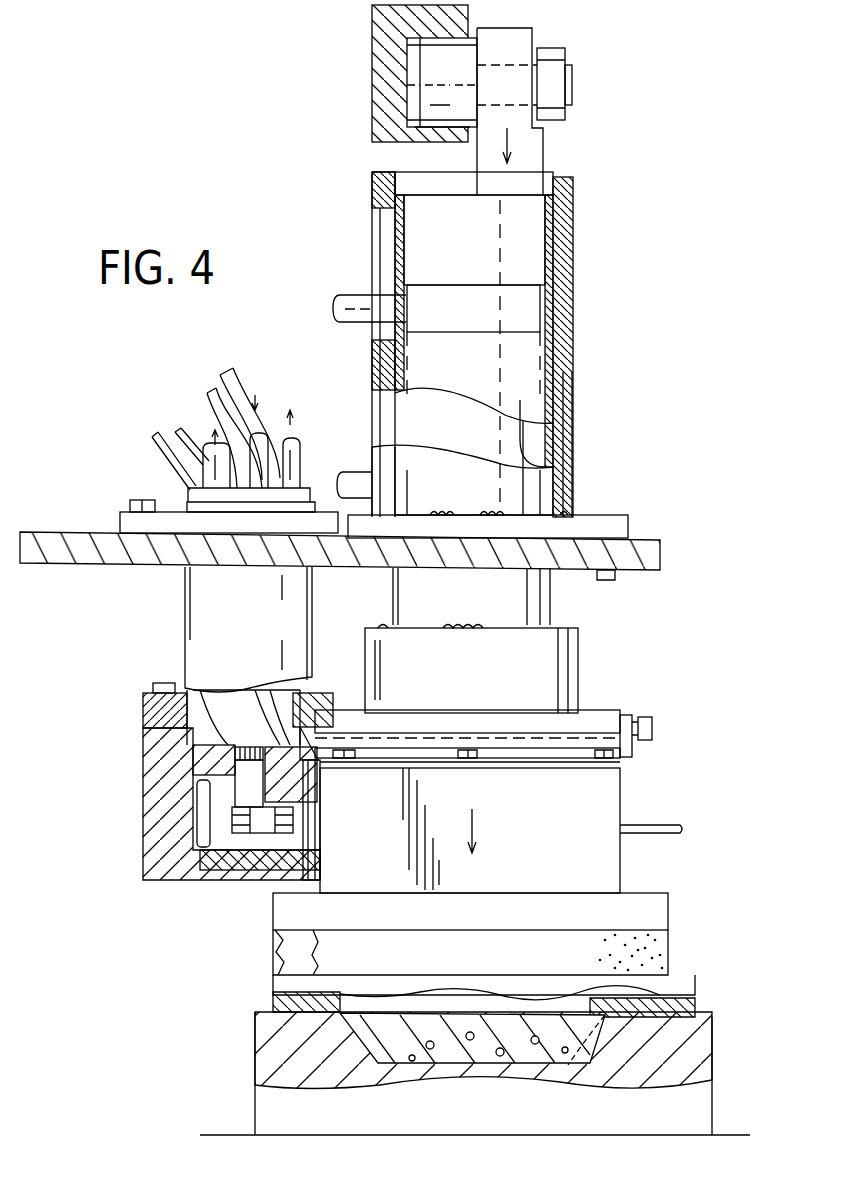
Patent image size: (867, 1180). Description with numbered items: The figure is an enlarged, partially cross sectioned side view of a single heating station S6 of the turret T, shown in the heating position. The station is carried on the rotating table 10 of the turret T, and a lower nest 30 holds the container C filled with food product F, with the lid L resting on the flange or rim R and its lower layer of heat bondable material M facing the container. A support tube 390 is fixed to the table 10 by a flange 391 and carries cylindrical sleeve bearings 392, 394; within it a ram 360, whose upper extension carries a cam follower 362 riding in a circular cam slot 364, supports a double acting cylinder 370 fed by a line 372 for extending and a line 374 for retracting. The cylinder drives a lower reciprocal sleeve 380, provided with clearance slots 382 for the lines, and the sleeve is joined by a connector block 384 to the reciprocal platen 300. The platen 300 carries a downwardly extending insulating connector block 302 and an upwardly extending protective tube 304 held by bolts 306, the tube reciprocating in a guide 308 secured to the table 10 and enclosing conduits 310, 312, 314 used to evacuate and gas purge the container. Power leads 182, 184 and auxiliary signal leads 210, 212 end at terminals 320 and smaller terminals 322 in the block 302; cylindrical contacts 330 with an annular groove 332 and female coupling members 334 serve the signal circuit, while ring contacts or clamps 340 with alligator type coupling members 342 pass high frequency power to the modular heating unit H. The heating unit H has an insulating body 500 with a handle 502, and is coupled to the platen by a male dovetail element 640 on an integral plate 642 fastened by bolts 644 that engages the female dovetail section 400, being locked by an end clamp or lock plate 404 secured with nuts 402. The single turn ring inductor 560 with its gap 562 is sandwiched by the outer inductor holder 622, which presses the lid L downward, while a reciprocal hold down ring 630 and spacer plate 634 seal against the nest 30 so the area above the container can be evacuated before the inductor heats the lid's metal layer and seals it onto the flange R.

The rotating table 10 is at (677, 539).
The lower container supporting nest 30 is at (705, 1072).
The power lead 182 is at (220, 378).
The power lead 184 is at (207, 417).
The auxiliary control or signal lead 210 is at (200, 420).
The auxiliary control or signal lead 212 is at (162, 448).
The reciprocal platen 300 is at (607, 717).
The connector block 302 is at (143, 805).
The protective tube 304 is at (195, 602).
The bolt 306 is at (160, 685).
The guide 308 is at (125, 520).
The conduit 310 is at (210, 468).
The conduit 312 is at (267, 443).
The conduit 314 is at (297, 453).
The terminal 320 is at (265, 778).
The terminal 322 is at (200, 810).
The cylindrical contact 330 is at (225, 855).
The annular groove 332 is at (200, 860).
The female coupling member 334 is at (292, 865).
The ring contact or clamp 340 is at (255, 830).
The alligator type coupling member 342 is at (293, 812).
The ram 360 is at (536, 160).
The cam follower 362 is at (452, 48).
The cam slot 364 is at (408, 108).
The double acting cylinder 370 is at (524, 367).
The line 372 is at (356, 296).
The line 374 is at (355, 472).
The reciprocal sleeve 380 is at (549, 263).
The clearance slot 382 is at (400, 357).
The connector block 384 is at (575, 650).
The support tube 390 is at (573, 193).
The flange 391 is at (617, 522).
The cylindrical sleeve bearing 392 is at (562, 222).
The cylindrical sleeve bearing 394 is at (558, 390).
The female dovetail section 400 is at (583, 733).
The nut 402 is at (652, 722).
The end clamp or lock plate 404 is at (632, 747).
The body 500 is at (612, 870).
The pin 502 is at (680, 833).
The ring inductor 560 is at (503, 998).
The gap 562 is at (455, 995).
The outer inductor holder 622 is at (333, 992).
The reciprocal hold down ring 630 is at (275, 994).
The spacer plate 634 is at (670, 952).
The male dovetail element 640 is at (435, 757).
The integral plate 642 is at (557, 768).
The bolt 644 is at (473, 755).
The heating station S6 is at (674, 351).
The turret T is at (637, 462).
The modular heating unit H is at (631, 784).
The lid L is at (557, 995).
The heat bondable material M is at (348, 1015).
The food product F is at (500, 1050).
The container C is at (595, 1020).
The flange or rim R is at (600, 1020).